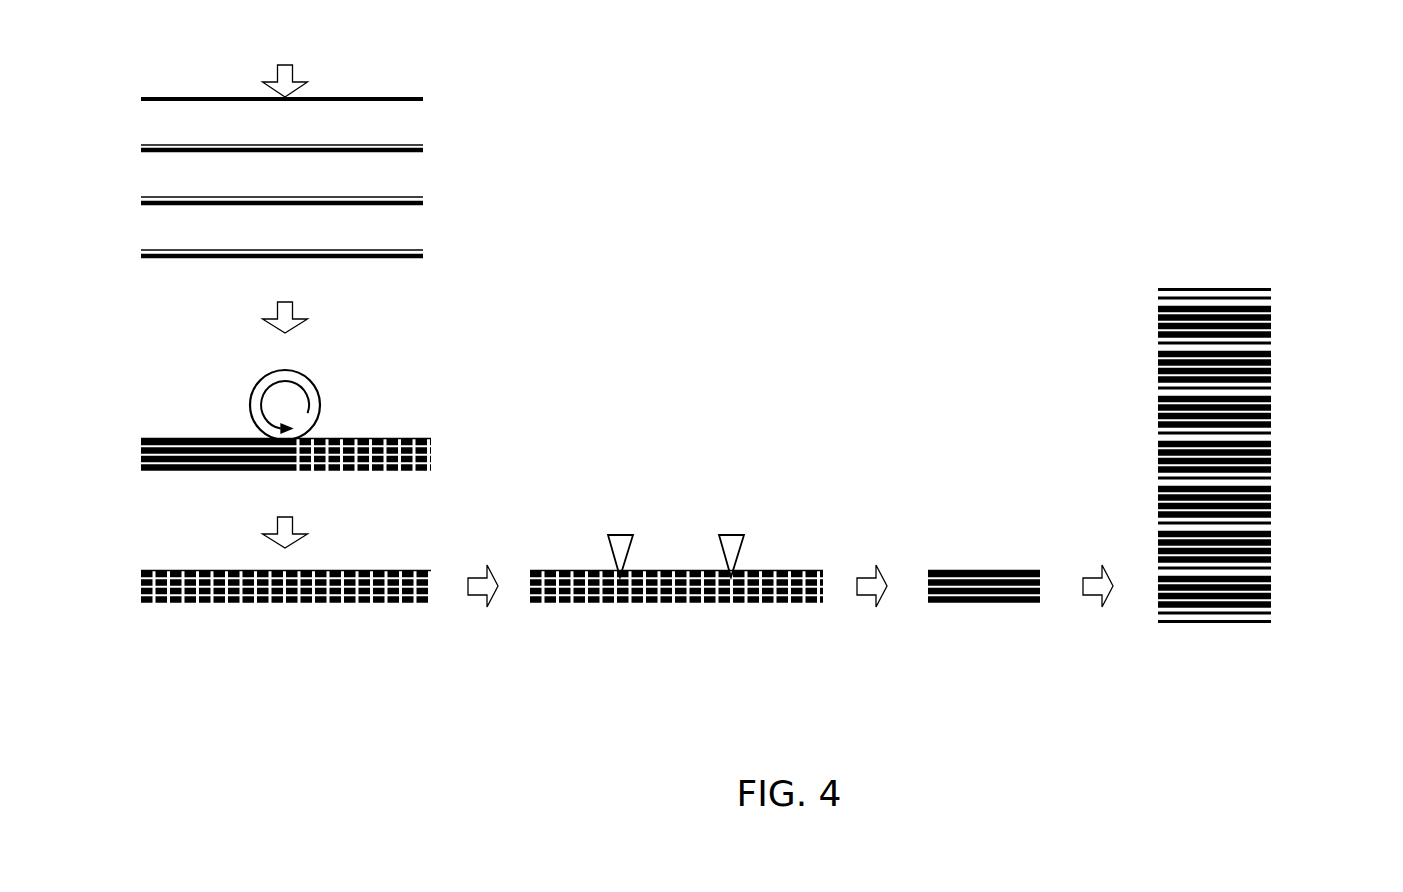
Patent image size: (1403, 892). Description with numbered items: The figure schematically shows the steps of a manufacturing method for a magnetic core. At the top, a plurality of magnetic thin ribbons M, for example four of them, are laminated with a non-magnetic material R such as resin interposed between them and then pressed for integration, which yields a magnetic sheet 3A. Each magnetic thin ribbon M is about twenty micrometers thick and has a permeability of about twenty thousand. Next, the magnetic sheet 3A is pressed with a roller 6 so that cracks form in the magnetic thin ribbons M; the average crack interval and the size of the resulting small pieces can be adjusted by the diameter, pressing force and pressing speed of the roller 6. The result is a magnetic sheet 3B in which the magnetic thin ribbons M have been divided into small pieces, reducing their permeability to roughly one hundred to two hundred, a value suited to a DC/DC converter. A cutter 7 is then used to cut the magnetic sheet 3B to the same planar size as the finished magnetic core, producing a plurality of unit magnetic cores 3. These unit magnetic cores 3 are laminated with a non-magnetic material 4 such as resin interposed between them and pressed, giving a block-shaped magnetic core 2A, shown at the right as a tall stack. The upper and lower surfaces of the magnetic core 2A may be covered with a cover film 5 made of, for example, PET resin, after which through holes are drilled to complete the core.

The block-shaped magnetic core 2A is at (1267, 449).
The unit magnetic core 3 is at (995, 570).
The magnetic sheet 3A is at (160, 438).
The magnetic sheet 3B is at (395, 438).
The non-magnetic material 4 is at (1272, 298).
The cover film 5 is at (1218, 287).
The roller 6 is at (312, 382).
The cutter 7 is at (618, 540).
The non-magnetic material R is at (421, 146).
The magnetic thin ribbon M is at (421, 150).